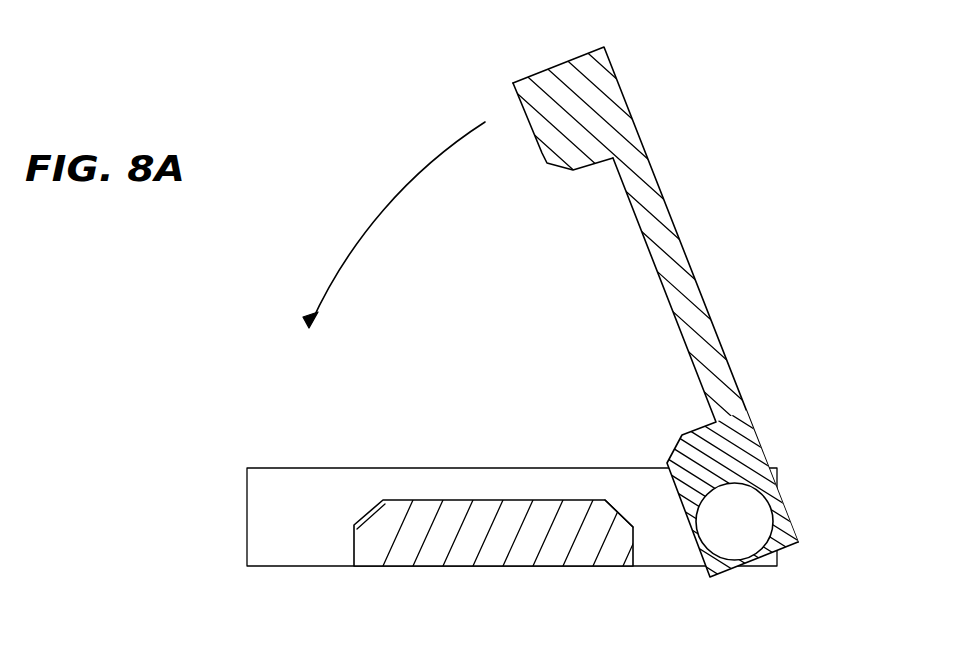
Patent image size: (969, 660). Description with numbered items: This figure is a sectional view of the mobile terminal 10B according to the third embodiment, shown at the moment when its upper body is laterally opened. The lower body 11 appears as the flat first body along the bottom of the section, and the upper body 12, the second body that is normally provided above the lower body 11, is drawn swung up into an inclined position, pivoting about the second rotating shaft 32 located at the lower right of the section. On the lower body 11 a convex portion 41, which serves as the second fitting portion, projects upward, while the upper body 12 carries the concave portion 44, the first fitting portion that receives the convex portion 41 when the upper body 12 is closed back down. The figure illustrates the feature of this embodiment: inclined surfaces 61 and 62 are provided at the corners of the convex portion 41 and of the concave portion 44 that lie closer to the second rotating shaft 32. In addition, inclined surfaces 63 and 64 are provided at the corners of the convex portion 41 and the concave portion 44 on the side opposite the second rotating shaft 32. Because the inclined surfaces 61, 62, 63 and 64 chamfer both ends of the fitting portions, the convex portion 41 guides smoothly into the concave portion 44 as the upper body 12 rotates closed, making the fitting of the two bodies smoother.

The mobile terminal 10B is at (312, 167).
The lower body 11 is at (295, 456).
The upper body 12 is at (706, 209).
The second rotating shaft 32 is at (738, 528).
The convex portion 41 is at (459, 498).
The concave portion 44 is at (630, 257).
The inclined surface 61 is at (620, 508).
The inclined surface 62 is at (676, 446).
The inclined surface 63 is at (366, 511).
The inclined surface 64 is at (568, 168).